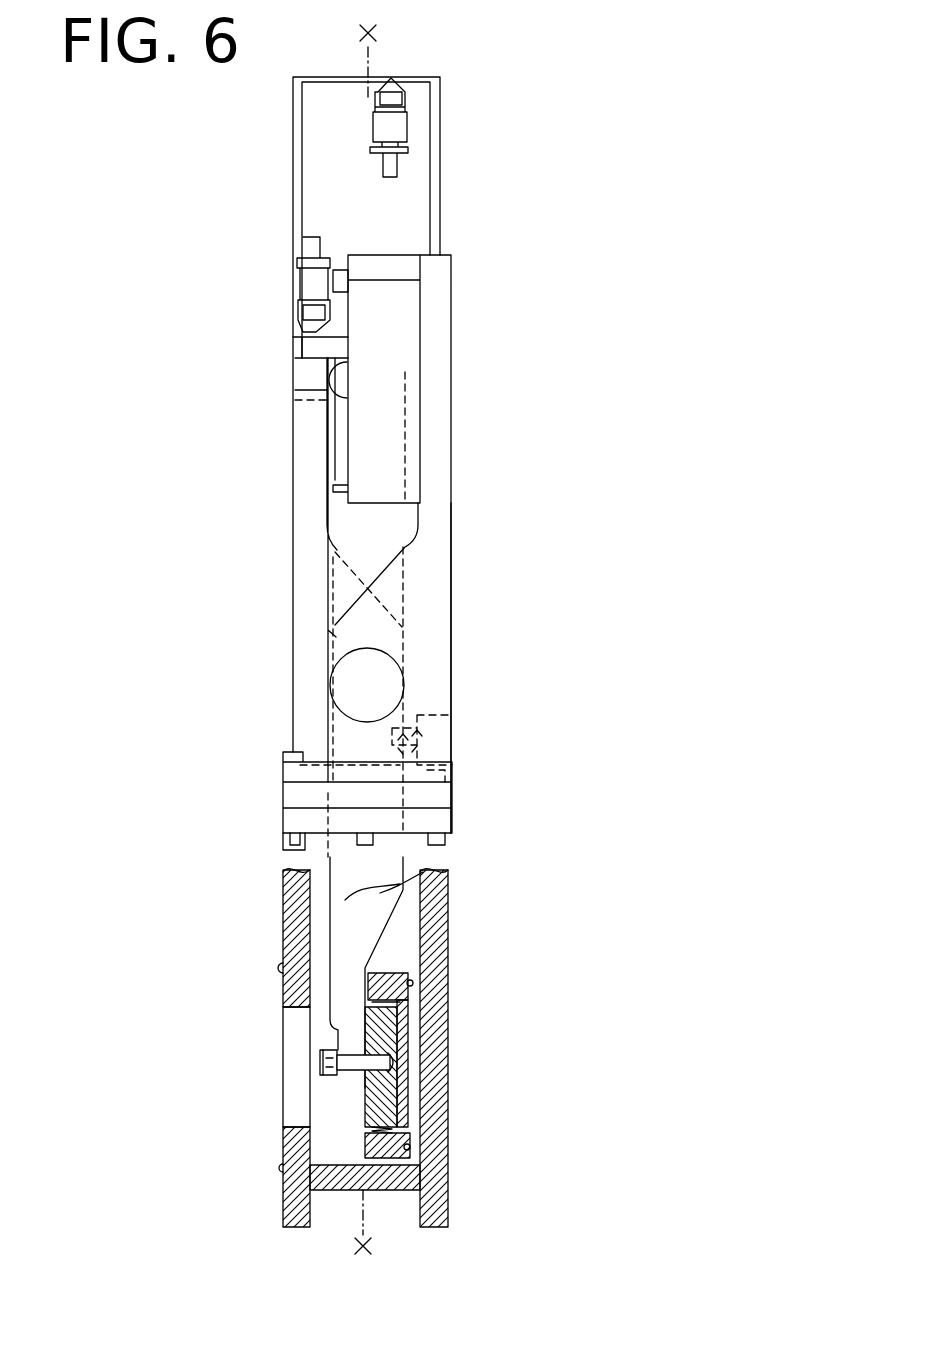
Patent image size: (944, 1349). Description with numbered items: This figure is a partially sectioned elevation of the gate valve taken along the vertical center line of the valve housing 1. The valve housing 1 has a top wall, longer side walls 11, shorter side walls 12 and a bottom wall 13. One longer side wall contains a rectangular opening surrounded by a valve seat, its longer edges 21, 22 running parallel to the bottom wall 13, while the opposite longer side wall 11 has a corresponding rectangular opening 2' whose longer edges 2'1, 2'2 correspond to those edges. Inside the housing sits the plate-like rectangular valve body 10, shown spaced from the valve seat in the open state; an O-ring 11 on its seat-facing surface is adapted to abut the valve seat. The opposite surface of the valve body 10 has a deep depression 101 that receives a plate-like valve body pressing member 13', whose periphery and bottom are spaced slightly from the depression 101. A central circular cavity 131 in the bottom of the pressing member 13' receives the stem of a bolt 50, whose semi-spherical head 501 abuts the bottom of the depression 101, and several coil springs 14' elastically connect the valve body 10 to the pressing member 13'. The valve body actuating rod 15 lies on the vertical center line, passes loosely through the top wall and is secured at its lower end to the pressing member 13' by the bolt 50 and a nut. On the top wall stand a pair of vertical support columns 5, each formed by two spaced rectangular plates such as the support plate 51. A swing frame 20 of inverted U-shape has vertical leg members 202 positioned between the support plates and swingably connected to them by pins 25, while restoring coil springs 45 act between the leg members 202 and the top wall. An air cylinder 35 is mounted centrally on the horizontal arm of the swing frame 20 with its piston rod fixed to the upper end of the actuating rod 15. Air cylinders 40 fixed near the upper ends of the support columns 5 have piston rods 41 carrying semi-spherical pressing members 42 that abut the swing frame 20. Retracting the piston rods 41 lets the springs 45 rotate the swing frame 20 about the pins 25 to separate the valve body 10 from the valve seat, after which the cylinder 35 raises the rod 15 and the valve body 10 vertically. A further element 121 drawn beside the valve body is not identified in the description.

The air cylinder 35 is at (418, 176).
The air cylinder 40 is at (400, 327).
The piston rod 41 is at (345, 400).
The pressing member 42 is at (335, 392).
The swing frame 20 is at (262, 552).
The vertical leg member 202 is at (318, 585).
The vertical support column 5 is at (472, 545).
The support plate 51 is at (425, 598).
The pin 25 is at (385, 683).
The restoring coil spring 45 is at (460, 737).
The valve housing 1 is at (510, 898).
The longer side wall 11 is at (283, 927).
The shorter side wall 12 is at (437, 935).
The valve body actuating rod 15 is at (440, 882).
The longer edge of opening 22 is at (437, 1022).
The coil spring 14' is at (484, 1134).
The central circular cavity 131 is at (420, 1066).
The semi-spherical head 501 is at (405, 1100).
The sleeve 121 is at (400, 1125).
The valve body 10 is at (403, 1110).
The longer edge of opening 21 is at (430, 1140).
The depression 101 is at (430, 1150).
The bolt 50 is at (328, 1088).
The rectangular opening 2' is at (297, 1056).
The longer edge of opening 2'2 is at (246, 1033).
The longer edge of opening 2'1 is at (246, 1120).
The valve body pressing member 13' is at (345, 1126).
The bottom wall 13 is at (336, 1216).